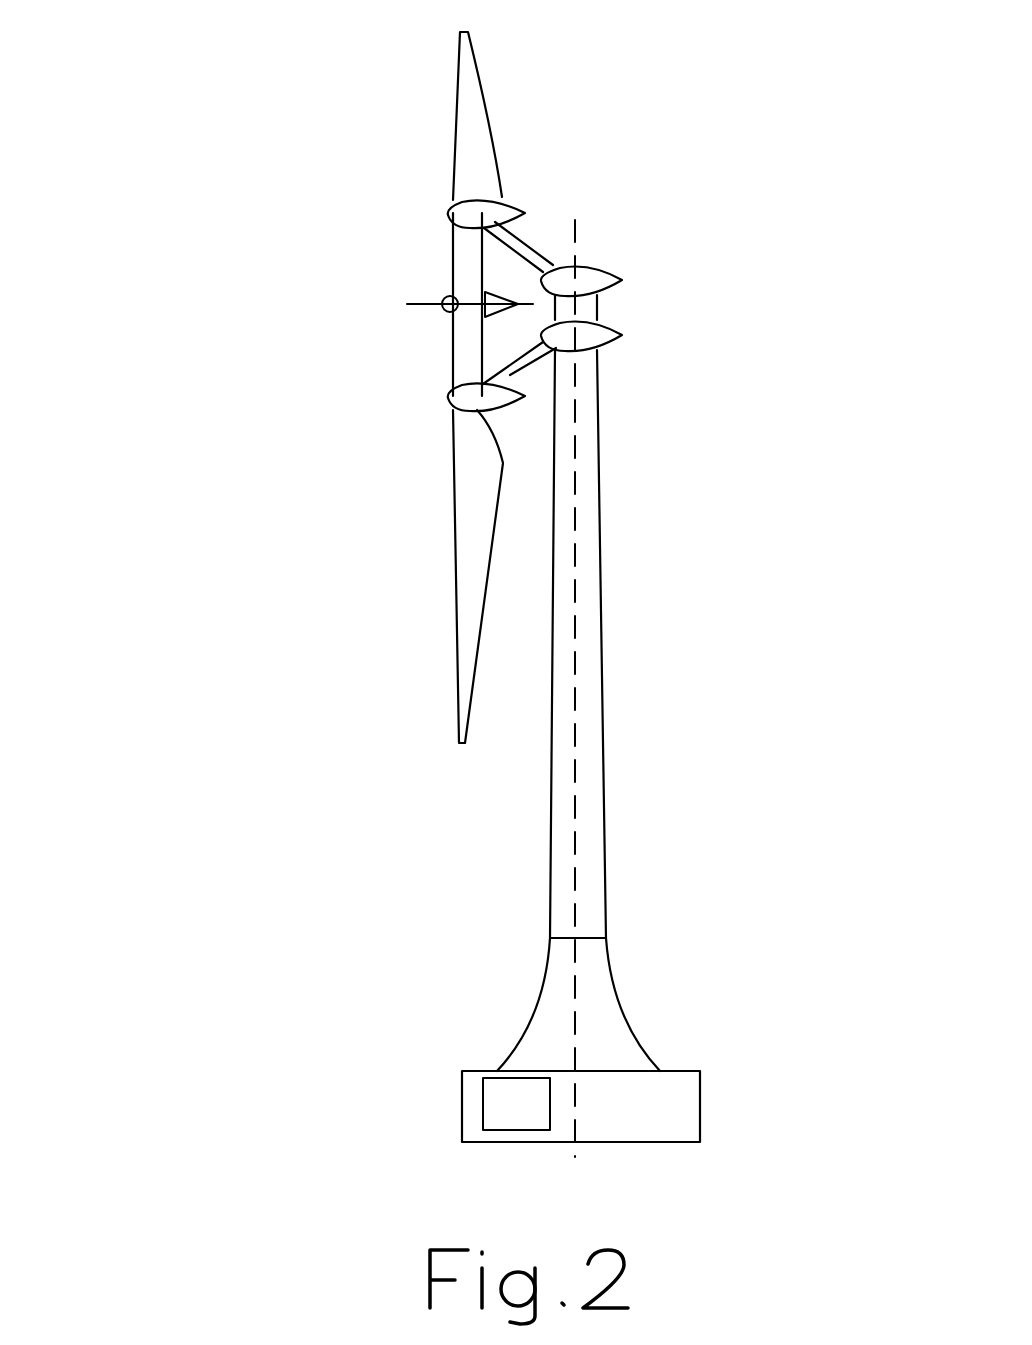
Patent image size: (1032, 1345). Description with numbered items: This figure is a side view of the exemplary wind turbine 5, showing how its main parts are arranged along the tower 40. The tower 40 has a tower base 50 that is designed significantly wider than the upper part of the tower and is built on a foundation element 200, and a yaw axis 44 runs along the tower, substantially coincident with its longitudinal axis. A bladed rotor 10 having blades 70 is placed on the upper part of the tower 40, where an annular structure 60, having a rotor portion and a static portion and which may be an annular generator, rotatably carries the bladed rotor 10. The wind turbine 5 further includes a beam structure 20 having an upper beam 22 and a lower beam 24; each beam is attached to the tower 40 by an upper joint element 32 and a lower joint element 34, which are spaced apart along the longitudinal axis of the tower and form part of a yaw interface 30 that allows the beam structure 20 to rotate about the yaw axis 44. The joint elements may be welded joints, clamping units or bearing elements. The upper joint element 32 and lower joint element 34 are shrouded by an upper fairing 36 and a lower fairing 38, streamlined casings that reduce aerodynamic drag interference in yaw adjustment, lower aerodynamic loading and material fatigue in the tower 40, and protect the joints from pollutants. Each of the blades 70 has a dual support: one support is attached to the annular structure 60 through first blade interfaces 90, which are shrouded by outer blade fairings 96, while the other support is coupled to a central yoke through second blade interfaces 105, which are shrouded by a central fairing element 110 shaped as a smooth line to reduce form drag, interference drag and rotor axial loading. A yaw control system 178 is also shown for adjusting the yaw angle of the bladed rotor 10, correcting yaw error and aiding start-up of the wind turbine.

The wind turbine 5 is at (213, 780).
The bladed rotor 10 is at (153, 297).
The beam structure 20 is at (585, 170).
The upper beam 22 is at (523, 254).
The lower beam 24 is at (510, 375).
The yaw interface 30 is at (803, 293).
The upper joint element 32 is at (605, 247).
The lower joint element 34 is at (647, 323).
The upper fairing 36 is at (593, 272).
The lower fairing 38 is at (597, 339).
The tower 40 is at (674, 660).
The yaw axis 44 is at (575, 887).
The tower base 50 is at (609, 983).
The annular structure 60 is at (453, 253).
The blade 70 is at (467, 60).
The first blade interface 90 is at (403, 206).
The outer blade fairing 96 is at (456, 152).
The second blade interface 105 is at (373, 294).
The central fairing element 110 is at (443, 312).
The yaw control system 178 is at (538, 1116).
The foundation element 200 is at (665, 1115).